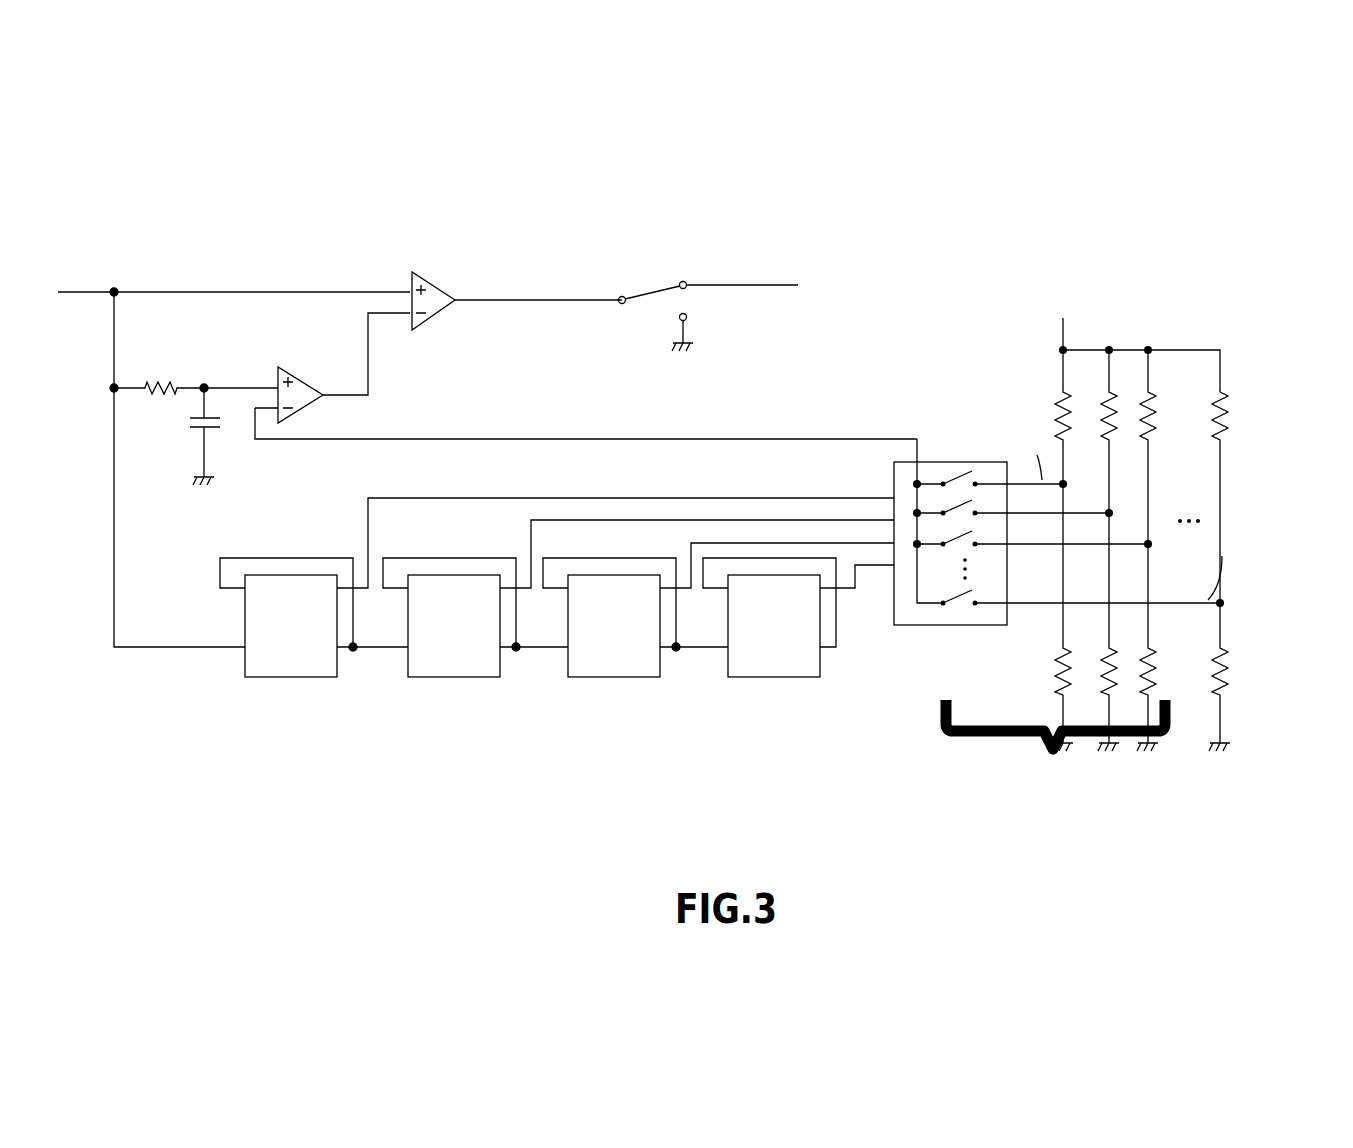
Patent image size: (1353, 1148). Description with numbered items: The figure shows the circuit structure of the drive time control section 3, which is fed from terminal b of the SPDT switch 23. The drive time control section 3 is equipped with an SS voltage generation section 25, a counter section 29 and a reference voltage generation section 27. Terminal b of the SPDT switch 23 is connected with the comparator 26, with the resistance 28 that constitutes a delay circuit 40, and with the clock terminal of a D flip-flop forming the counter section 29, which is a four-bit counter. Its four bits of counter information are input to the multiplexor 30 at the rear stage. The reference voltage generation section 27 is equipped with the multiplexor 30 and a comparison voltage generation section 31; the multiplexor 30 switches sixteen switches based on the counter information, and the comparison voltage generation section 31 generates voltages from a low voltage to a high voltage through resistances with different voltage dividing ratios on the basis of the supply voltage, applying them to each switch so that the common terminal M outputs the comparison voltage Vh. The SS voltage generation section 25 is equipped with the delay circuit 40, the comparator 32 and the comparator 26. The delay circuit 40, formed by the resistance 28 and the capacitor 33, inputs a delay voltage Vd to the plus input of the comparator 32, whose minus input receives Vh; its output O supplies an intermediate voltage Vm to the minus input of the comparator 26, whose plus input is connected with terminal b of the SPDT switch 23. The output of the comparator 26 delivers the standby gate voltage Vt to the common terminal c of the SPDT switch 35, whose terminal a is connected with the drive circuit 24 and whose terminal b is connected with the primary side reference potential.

The drive time control section 3 is at (541, 217).
The SPDT switch 23 is at (227, 437).
The drive circuit 24 is at (787, 270).
The SS voltage generation section 25 is at (402, 360).
The comparator 26 is at (406, 295).
The reference voltage generation section 27 is at (1081, 714).
The resistance 28 is at (159, 374).
The counter section 29 is at (557, 598).
The multiplexor 30 is at (1041, 553).
The comparison voltage generation section 31 is at (1138, 427).
The comparator 32 is at (586, 395).
The capacitor 33 is at (191, 436).
The SPDT switch 35 is at (663, 301).
The delay circuit 40 is at (226, 338).